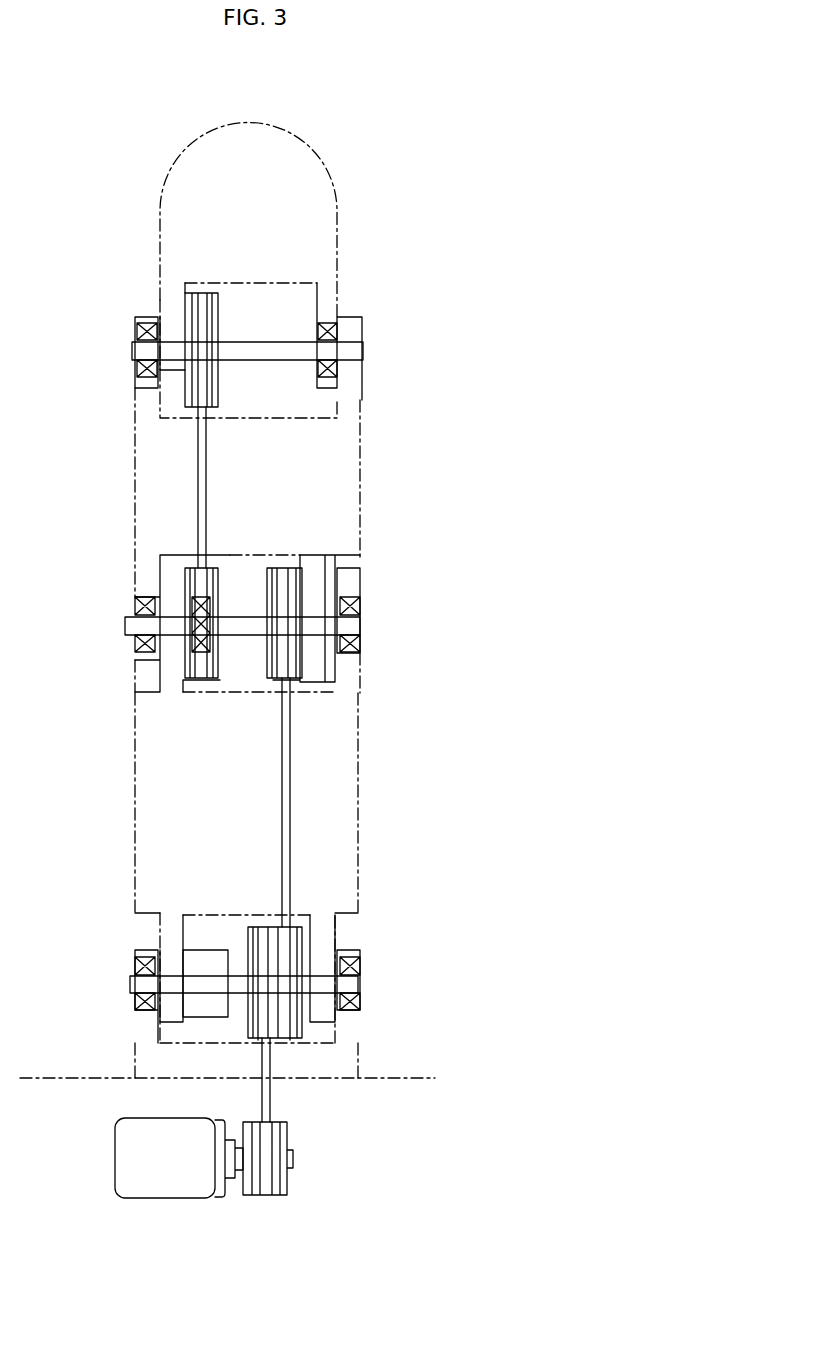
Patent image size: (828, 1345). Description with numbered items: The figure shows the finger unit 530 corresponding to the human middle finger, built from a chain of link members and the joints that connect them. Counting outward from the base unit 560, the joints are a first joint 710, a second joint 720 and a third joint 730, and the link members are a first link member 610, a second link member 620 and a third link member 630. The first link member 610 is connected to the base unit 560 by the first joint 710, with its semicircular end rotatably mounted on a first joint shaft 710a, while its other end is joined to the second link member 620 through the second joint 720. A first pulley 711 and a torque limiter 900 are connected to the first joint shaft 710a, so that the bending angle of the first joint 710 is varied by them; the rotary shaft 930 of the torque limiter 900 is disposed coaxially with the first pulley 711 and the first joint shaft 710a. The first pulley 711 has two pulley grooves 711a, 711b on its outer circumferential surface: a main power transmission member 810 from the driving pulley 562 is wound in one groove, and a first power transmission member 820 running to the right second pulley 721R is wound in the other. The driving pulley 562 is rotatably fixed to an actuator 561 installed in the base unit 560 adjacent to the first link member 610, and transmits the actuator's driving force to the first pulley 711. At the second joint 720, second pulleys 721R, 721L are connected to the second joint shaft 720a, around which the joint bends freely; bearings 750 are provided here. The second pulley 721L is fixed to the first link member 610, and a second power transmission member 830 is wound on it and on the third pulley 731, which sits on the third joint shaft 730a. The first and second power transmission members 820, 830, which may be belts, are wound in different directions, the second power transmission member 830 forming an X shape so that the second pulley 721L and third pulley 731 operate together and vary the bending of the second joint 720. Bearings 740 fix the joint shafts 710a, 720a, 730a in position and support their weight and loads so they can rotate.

The finger unit 530 is at (351, 136).
The third link member 630 is at (330, 207).
The second link member 620 is at (350, 473).
The first link member 610 is at (350, 752).
The third joint 730 is at (362, 328).
The third pulley 731 is at (186, 304).
The third joint shaft 730a is at (355, 350).
The rotary shaft 930 is at (327, 350).
The bearings 740 is at (137, 359).
The second power transmission member 830 is at (198, 495).
The second joint 720 is at (362, 601).
The second pulley 721L is at (187, 575).
The second pulley 721R is at (296, 573).
The bearings 750 is at (193, 653).
The second joint shaft 720a is at (360, 623).
The first power transmission member 820 is at (290, 821).
The first joint 710 is at (362, 961).
The first pulley 711 is at (302, 928).
The first joint shaft 710a is at (354, 984).
The pulley groove 711a is at (291, 1040).
The pulley groove 711b is at (259, 1040).
The torque limiter 900 is at (190, 1007).
The main power transmission member 810 is at (267, 1103).
The base unit 560 is at (395, 1078).
The actuator 561 is at (188, 1189).
The driving pulley 562 is at (284, 1195).